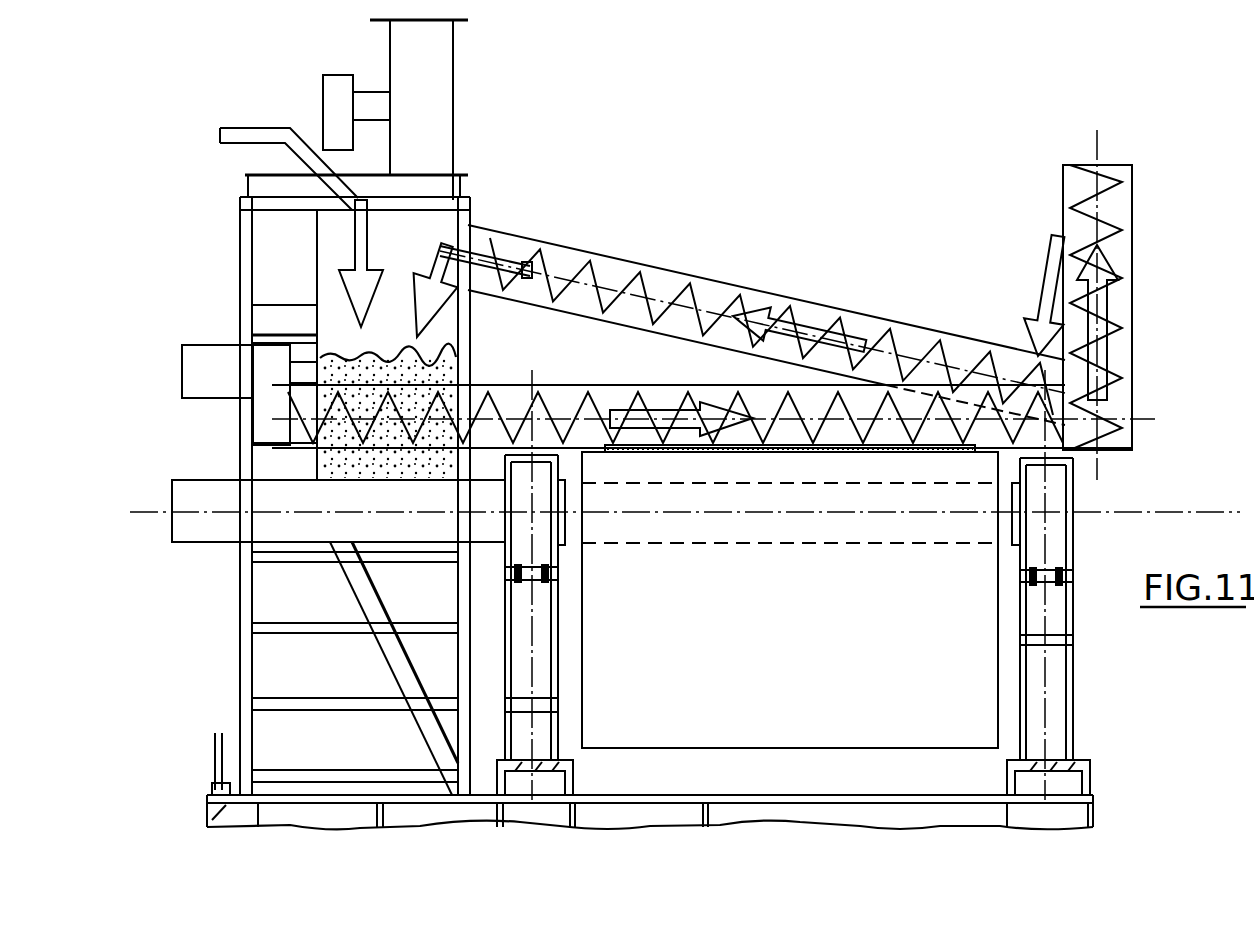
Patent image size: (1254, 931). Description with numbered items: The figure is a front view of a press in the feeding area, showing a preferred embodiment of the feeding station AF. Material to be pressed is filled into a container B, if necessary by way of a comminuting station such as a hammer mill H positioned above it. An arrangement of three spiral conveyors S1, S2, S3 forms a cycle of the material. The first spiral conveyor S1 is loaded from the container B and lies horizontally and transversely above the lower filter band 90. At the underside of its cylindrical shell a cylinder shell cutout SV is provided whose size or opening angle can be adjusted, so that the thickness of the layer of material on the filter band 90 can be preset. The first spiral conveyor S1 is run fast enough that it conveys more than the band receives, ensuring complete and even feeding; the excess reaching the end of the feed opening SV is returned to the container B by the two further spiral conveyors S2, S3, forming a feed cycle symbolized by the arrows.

The hammer mill H is at (356, 110).
The container B is at (415, 256).
The first spiral conveyor S1 is at (566, 398).
The second spiral conveyor S2 is at (1132, 355).
The third spiral conveyor S3 is at (713, 283).
The cylinder shell cutout SV is at (683, 455).
The feeding station AF is at (840, 262).
The lower filter band 90 is at (806, 599).